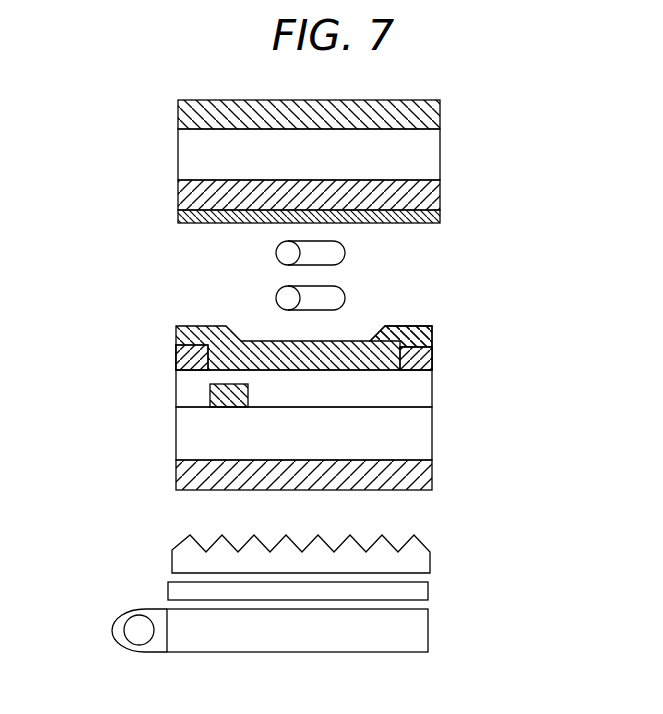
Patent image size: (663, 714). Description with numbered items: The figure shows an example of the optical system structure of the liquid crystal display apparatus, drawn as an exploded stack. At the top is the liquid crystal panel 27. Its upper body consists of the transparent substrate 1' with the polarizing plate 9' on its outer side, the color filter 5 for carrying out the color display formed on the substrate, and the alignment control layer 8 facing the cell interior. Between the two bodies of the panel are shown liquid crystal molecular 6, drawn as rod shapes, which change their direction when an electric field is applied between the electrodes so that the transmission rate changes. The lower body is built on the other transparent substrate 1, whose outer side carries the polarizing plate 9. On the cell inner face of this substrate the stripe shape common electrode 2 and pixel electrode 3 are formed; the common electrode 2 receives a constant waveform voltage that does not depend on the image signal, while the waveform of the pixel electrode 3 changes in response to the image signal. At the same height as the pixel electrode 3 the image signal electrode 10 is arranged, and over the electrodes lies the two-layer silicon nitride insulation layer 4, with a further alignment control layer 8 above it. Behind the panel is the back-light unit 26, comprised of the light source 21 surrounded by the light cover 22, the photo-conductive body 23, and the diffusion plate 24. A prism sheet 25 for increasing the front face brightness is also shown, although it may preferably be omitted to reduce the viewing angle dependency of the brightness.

The polarizing plate 9' is at (280, 112).
The transparent substrate 1' is at (280, 154).
The color filter 5 is at (434, 190).
The insulation layer 4 is at (420, 389).
The alignment control layer 8 is at (434, 217).
The liquid crystal molecular 6 is at (277, 253).
The pixel electrode 3 is at (430, 356).
The image signal electrode 10 is at (178, 353).
The common electrode 2 is at (229, 407).
The transparent substrate 1 is at (278, 433).
The polarizing plate 9 is at (278, 476).
The liquid crystal panel 27 is at (343, 292).
The prism sheet 25 is at (420, 560).
The diffusion plate 24 is at (420, 593).
The photo-conductive body 23 is at (420, 631).
The light cover 22 is at (114, 620).
The light source 21 is at (137, 640).
The back-light unit 26 is at (315, 608).